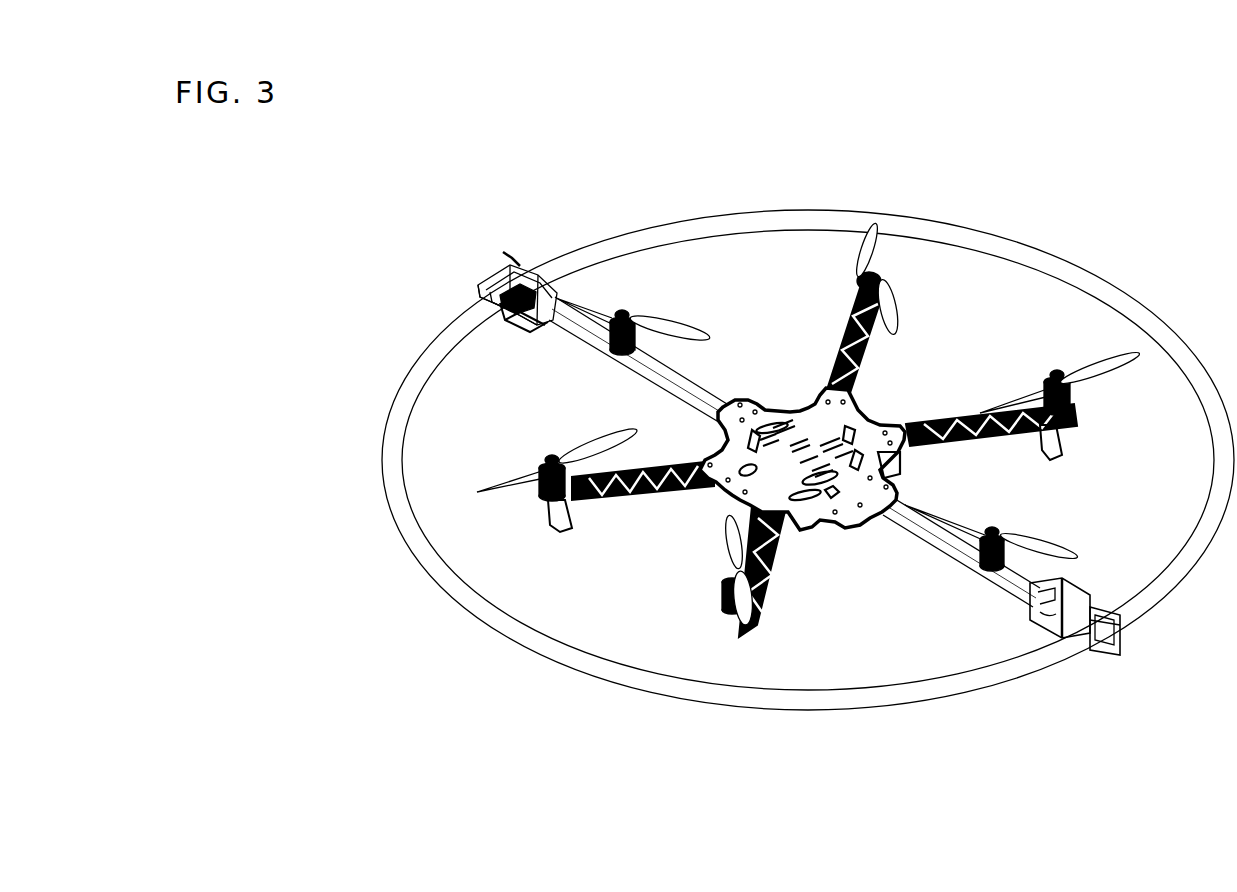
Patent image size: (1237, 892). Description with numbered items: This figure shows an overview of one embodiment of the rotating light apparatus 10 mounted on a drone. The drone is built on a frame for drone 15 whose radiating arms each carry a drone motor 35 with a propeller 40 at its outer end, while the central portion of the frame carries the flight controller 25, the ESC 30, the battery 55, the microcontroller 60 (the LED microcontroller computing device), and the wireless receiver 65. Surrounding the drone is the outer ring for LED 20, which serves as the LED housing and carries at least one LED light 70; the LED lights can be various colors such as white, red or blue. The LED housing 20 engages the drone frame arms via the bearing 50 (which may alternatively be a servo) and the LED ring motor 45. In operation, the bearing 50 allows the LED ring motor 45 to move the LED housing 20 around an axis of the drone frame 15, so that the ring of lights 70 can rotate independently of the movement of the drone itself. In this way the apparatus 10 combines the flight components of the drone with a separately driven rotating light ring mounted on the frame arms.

The apparatus 10 is at (718, 377).
The frame for drone 15 is at (997, 396).
The outer ring for LED; LED housing 20 is at (808, 495).
The flight controller 25 is at (802, 419).
The ESC 30 is at (822, 307).
The drone motor 35 is at (802, 459).
The propeller 40 is at (576, 476).
The LED ring motor 45 is at (1084, 576).
The bearing or servo 50 is at (638, 278).
The battery 55 is at (421, 325).
The microcontroller; LED microcontroller computing device 60 is at (426, 251).
The wireless receiver 65 is at (425, 206).
The LED light or light 70 is at (1115, 261).